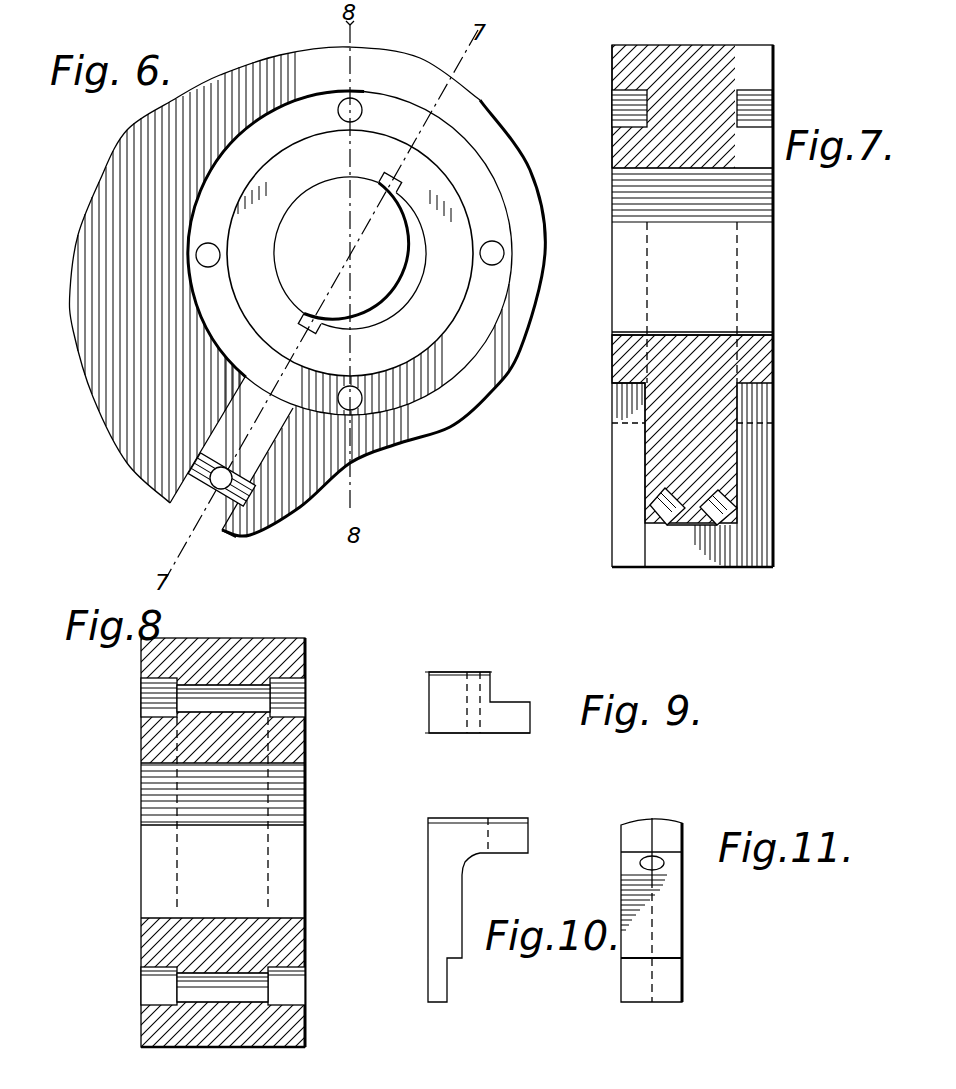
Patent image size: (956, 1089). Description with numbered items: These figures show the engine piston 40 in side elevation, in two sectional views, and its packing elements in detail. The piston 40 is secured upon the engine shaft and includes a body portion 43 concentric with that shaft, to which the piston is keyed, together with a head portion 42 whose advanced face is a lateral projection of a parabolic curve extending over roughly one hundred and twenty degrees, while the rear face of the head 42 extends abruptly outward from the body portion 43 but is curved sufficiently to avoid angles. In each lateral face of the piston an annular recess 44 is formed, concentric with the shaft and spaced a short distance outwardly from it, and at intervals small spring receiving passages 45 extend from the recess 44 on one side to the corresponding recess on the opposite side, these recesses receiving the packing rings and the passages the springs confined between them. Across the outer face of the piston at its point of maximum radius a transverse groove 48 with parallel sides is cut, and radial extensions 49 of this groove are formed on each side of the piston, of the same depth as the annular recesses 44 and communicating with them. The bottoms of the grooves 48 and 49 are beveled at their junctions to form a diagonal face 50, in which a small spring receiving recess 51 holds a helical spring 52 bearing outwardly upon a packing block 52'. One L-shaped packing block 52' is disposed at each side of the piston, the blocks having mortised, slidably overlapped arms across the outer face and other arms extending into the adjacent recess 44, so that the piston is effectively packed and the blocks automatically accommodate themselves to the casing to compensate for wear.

In FIG. 6, the engine piston 40 is at (484, 388).
In FIG. 7, the engine piston 40 is at (765, 357).
In FIG. 8, the engine piston 40 is at (295, 933).
In FIG. 6, the head portion 42 is at (140, 477).
In FIG. 7, the head portion 42 is at (768, 550).
In FIG. 6, the body portion 43 is at (522, 185).
In FIG. 7, the body portion 43 is at (612, 168).
In FIG. 6, the annular recess 44 is at (507, 288).
In FIG. 7, the annular recess 44 is at (615, 122).
In FIG. 8, the annular recess 44 is at (303, 690).
In FIG. 6, the spring receiving passages 45 is at (352, 108).
In FIG. 8, the spring receiving passages 45 is at (255, 702).
In FIG. 6, the transverse groove 48 is at (188, 503).
In FIG. 7, the transverse groove 48 is at (657, 555).
In FIG. 6, the radial extensions 49 is at (235, 418).
In FIG. 7, the radial extensions 49 is at (620, 448).
In FIG. 6, the diagonal face 50 is at (193, 462).
In FIG. 7, the diagonal face 50 is at (653, 508).
In FIG. 6, the spring receiving recess 51 is at (251, 496).
In FIG. 7, the spring receiving recess 51 is at (660, 515).
In FIG. 10, the helical spring 52 is at (457, 910).
In FIG. 11, the helical spring 52 is at (651, 892).
In FIG. 9, the packing block 52' is at (465, 722).